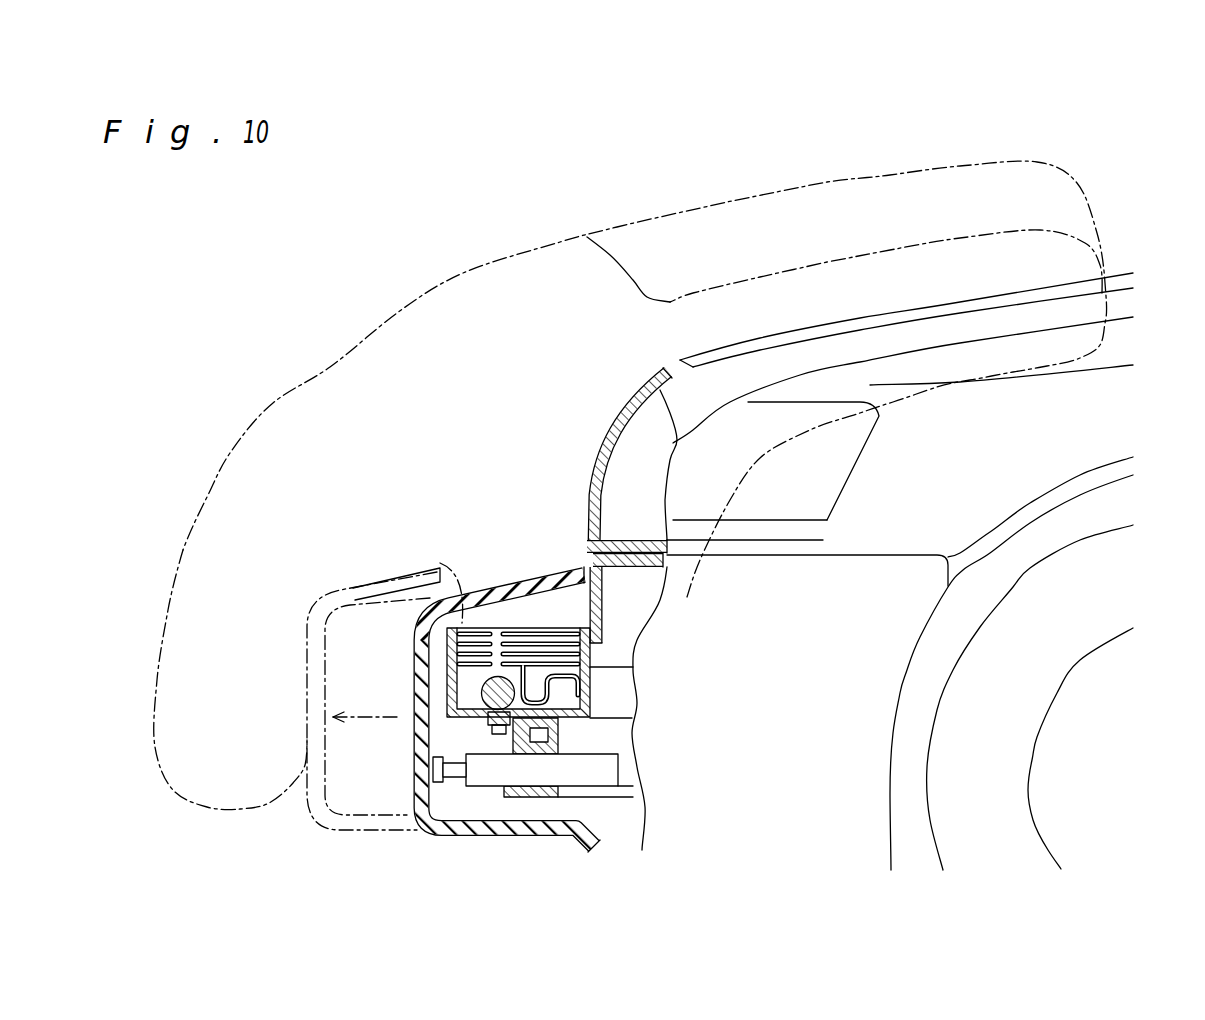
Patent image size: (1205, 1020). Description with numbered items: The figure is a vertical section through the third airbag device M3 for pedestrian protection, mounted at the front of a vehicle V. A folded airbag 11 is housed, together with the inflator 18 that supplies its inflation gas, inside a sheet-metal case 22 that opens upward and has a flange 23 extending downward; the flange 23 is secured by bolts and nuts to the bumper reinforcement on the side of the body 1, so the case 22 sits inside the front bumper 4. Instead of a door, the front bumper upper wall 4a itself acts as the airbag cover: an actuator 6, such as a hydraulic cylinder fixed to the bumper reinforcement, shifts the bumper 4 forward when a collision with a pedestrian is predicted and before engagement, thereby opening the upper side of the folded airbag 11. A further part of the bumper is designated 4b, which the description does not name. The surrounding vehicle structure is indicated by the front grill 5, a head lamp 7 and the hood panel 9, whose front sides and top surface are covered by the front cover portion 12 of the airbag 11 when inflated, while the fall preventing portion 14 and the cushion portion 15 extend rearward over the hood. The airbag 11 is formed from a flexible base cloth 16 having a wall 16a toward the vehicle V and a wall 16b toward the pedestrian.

The body 1 is at (1110, 397).
The front bumper 4 is at (340, 837).
The front bumper upper wall 4a is at (515, 587).
The housing wall 4b is at (417, 666).
The front grill 5 is at (600, 440).
The actuator 6 is at (603, 770).
The head lamps 7 is at (778, 420).
The hood panel 9 is at (1040, 297).
The airbag 11 is at (275, 393).
The front cover portion 12 is at (213, 517).
The fall preventing portion 14 is at (865, 195).
The cushion portion 15 is at (782, 307).
The base cloth 16 is at (645, 341).
The wall of the base cloth toward the vehicle 16a is at (844, 296).
The wall of the base cloth toward a pedestrian 16b is at (645, 341).
The inflator 18 is at (486, 697).
The case 22 is at (593, 667).
The flange 23 is at (517, 800).
The third airbag device M3 is at (213, 812).
The vehicle V is at (1117, 253).